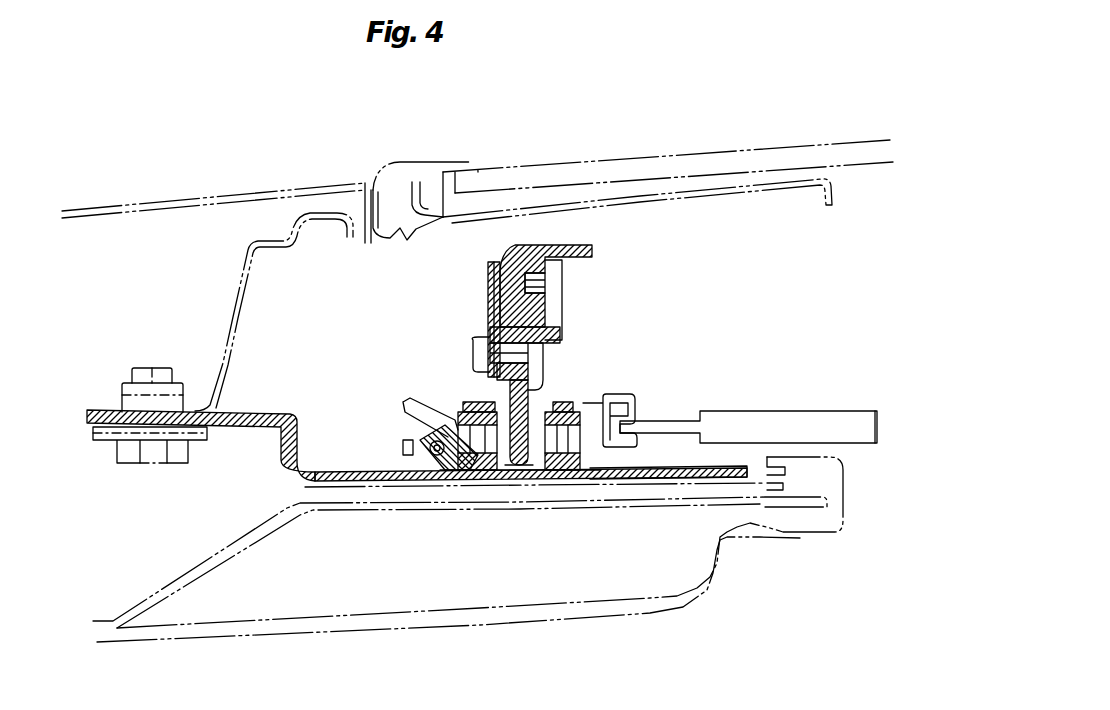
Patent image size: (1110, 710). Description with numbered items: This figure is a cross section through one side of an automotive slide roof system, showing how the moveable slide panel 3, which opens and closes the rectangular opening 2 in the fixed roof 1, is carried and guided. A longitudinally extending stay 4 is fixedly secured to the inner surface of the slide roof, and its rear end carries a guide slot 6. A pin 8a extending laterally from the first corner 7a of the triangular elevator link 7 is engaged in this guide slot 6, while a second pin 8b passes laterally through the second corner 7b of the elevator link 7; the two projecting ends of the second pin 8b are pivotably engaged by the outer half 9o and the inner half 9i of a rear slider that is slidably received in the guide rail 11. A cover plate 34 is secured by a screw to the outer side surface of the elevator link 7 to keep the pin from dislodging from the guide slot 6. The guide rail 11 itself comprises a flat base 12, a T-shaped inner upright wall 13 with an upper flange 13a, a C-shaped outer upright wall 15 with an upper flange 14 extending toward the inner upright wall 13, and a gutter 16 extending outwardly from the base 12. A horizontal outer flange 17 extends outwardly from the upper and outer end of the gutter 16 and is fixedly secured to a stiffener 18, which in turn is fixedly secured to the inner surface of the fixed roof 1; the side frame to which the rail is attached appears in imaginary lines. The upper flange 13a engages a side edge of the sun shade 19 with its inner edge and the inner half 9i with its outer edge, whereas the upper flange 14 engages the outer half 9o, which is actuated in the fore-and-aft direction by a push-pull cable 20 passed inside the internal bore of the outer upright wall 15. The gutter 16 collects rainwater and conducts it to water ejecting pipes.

The fixed roof 1 is at (308, 185).
The rectangular opening 2 is at (373, 188).
The moveable slide panel 3 is at (513, 166).
The stay 4 is at (510, 254).
The guide slot 6 is at (540, 280).
The elevator link 7 is at (537, 396).
The first corner 7a is at (563, 272).
The second corner 7b is at (525, 473).
The pin 8a is at (500, 296).
The second pin 8b is at (492, 475).
The outer half of rear slider 9o is at (483, 481).
The inner half of rear slider 9i is at (567, 473).
The guide rail 11 is at (408, 415).
The flat base 12 is at (640, 478).
The inner upright wall 13 is at (608, 480).
The upper flange of inner upright wall 13a is at (587, 403).
The upper flange of outer upright wall 14 is at (467, 400).
The outer upright wall 15 is at (410, 452).
The gutter 16 is at (347, 472).
The horizontal outer flange 17 is at (240, 412).
The stiffener 18 is at (232, 316).
The sun shade 19 is at (761, 417).
The push-pull cable 20 is at (433, 458).
The cover plate 34 is at (488, 318).